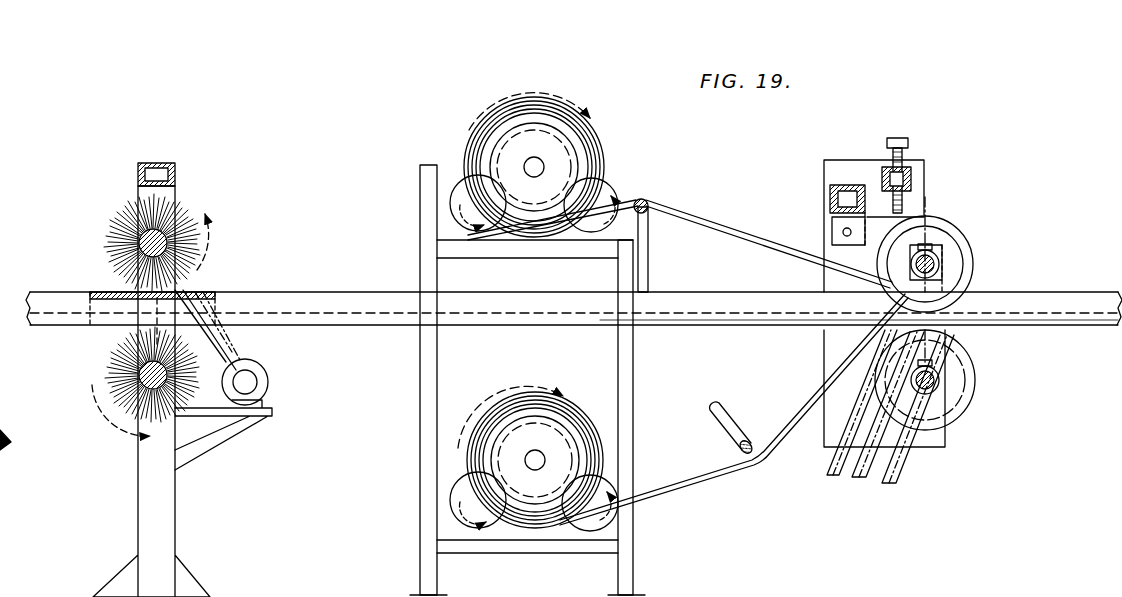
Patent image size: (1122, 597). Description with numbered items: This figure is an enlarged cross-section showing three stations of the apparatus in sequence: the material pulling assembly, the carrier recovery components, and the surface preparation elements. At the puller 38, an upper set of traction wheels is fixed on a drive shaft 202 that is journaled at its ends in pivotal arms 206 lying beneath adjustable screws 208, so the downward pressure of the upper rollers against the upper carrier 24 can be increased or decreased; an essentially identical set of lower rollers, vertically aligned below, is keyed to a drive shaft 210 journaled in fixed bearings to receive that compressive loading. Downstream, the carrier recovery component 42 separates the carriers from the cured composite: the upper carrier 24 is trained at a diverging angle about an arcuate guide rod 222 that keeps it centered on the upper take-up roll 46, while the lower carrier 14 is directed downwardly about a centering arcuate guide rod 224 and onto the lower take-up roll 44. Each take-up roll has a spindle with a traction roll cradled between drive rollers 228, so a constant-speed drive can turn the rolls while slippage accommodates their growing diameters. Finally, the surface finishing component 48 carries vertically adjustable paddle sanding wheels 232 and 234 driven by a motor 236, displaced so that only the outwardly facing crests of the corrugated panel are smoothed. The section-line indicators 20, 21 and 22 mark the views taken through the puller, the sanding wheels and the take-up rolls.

The lower carrier 14 is at (1088, 325).
The section line 20- 20 is at (907, 205).
The section line 21- 21 is at (165, 280).
The section line 22- 22 is at (510, 355).
The upper carrier 24 is at (740, 232).
The puller 38 is at (1002, 276).
The carrier recovery component 42 is at (640, 168).
The lower take-up roll 44 is at (488, 422).
The upper take-up roll 46 is at (522, 110).
The surface finishing component 48 is at (231, 200).
The drive shaft 202 is at (934, 262).
The pivotal arms 206 is at (878, 214).
The adjustable screws 208 is at (900, 158).
The drive shaft 210 is at (934, 392).
The arcuate guide rod 222 is at (656, 212).
The centering arcuate guide rod 224 is at (745, 440).
The drive rollers 228 is at (612, 490).
The paddle sanding wheel 232 is at (190, 247).
The paddle sanding wheel 234 is at (150, 378).
The motor 236 is at (270, 370).